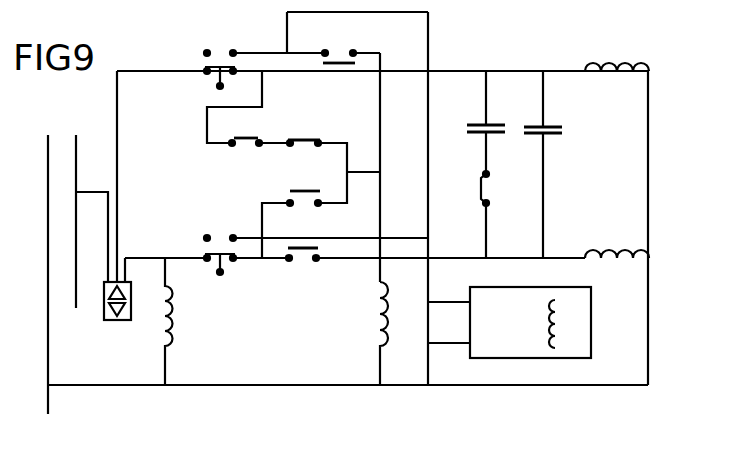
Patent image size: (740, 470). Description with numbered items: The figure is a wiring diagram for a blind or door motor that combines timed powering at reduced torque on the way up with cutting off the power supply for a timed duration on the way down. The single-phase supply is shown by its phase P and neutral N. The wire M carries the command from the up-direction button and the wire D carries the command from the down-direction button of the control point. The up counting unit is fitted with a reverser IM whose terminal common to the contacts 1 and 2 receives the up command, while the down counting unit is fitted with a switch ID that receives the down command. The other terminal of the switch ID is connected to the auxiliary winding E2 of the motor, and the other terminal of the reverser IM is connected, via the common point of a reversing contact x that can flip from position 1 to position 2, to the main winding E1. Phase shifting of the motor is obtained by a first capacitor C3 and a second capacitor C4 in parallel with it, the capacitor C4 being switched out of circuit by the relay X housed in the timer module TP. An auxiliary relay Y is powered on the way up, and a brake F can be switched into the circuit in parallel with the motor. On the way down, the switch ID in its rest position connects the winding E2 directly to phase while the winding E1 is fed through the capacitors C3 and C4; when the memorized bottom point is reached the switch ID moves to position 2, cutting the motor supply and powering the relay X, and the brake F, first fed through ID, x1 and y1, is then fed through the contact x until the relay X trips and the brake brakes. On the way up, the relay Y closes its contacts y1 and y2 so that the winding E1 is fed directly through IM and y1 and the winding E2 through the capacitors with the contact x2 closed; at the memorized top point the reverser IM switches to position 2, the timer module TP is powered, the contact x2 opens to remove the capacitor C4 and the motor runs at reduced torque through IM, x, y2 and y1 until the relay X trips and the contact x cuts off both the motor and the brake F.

The neutral N is at (48, 261).
The phase P is at (88, 208).
The wire connected to the down-direction button D is at (120, 255).
The wire connected to the up-direction button M is at (145, 244).
The auxiliary relay Y is at (179, 321).
The brake F is at (392, 333).
The switch (reverser) of the down counting unit ID is at (220, 60).
The reverser of the up counting unit IM is at (221, 246).
The contact/position 2 is at (191, 145).
The contact/position 1 is at (196, 178).
The reversing contact x is at (339, 45).
The contact x1 (normally closed) x1 is at (258, 148).
The contact x2 (normally closed) x2 is at (470, 178).
The contact y1 of relay Y y1 is at (313, 108).
The contact y2 of relay Y y2 is at (304, 211).
The second capacitor C4 is at (491, 164).
The first capacitor C3 is at (548, 164).
The auxiliary winding E2 is at (617, 55).
The main winding E1 is at (617, 243).
The timer module TP is at (578, 318).
The relay of the timer module X is at (564, 325).